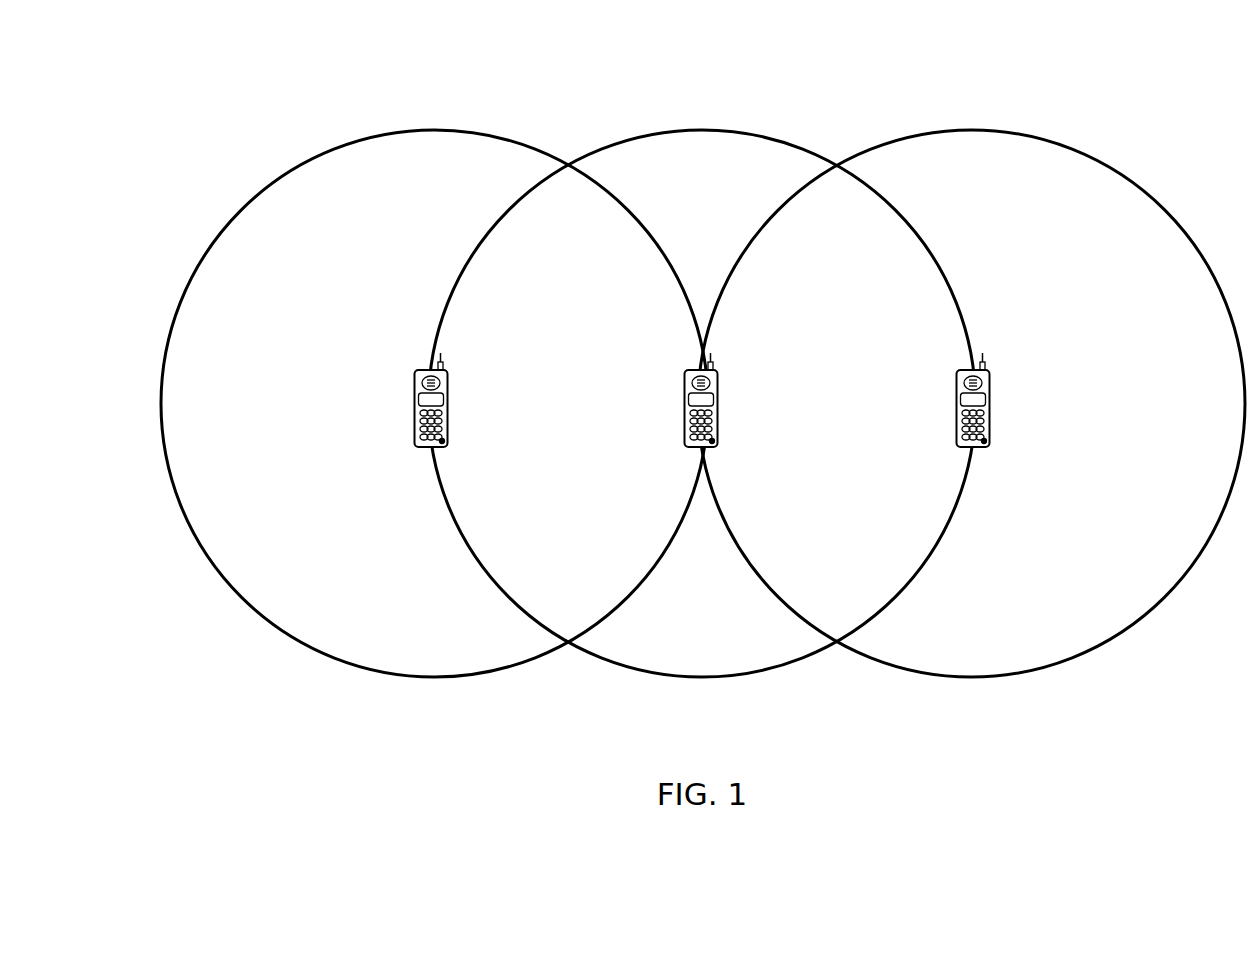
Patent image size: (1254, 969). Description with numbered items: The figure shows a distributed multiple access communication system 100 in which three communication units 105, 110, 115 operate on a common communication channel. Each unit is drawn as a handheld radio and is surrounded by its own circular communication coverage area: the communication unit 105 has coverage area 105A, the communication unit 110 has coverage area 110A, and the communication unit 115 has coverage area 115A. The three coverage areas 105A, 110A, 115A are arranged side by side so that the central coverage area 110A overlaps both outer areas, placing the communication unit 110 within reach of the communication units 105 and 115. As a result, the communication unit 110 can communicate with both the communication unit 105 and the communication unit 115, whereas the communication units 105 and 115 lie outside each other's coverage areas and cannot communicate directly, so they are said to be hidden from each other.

The distributed multiple access communication system 100 is at (1153, 47).
The communication unit 105 is at (415, 429).
The communication unit 110 is at (685, 429).
The communication unit 115 is at (957, 429).
The communication coverage area 105A is at (404, 131).
The communication coverage area 110A is at (675, 131).
The communication coverage area 115A is at (945, 131).